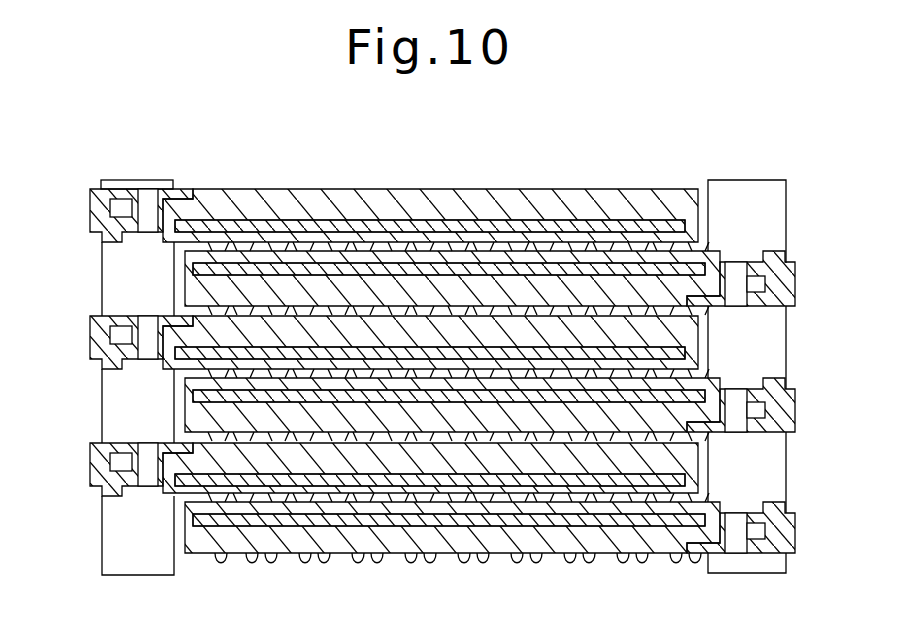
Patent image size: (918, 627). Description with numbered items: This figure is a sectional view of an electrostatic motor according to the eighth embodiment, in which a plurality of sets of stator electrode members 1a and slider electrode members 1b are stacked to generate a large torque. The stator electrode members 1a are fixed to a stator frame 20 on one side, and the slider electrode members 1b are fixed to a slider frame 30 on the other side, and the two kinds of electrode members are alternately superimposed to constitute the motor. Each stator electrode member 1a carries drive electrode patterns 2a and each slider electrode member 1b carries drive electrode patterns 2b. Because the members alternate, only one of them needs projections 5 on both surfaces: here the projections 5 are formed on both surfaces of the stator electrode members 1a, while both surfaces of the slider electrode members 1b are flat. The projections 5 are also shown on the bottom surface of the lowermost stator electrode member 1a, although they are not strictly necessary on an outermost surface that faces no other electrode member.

The stator electrode member 1a is at (784, 291).
The slider electrode member 1b is at (98, 215).
The drive electrode patterns of the stator electrode 2a is at (453, 517).
The drive electrode patterns of the slider electrode 2b is at (436, 226).
The projections 5 is at (218, 313).
The stator frame 20 is at (742, 189).
The slider frame 30 is at (143, 179).